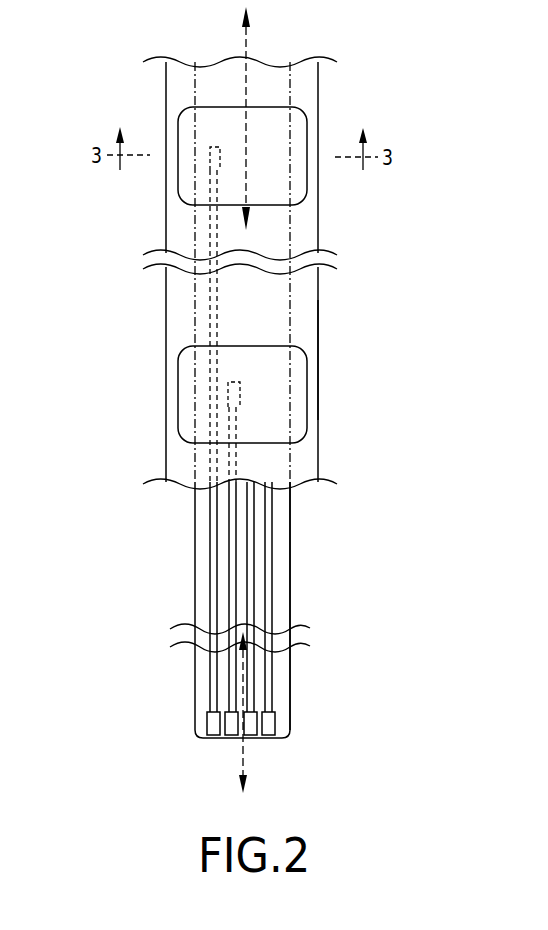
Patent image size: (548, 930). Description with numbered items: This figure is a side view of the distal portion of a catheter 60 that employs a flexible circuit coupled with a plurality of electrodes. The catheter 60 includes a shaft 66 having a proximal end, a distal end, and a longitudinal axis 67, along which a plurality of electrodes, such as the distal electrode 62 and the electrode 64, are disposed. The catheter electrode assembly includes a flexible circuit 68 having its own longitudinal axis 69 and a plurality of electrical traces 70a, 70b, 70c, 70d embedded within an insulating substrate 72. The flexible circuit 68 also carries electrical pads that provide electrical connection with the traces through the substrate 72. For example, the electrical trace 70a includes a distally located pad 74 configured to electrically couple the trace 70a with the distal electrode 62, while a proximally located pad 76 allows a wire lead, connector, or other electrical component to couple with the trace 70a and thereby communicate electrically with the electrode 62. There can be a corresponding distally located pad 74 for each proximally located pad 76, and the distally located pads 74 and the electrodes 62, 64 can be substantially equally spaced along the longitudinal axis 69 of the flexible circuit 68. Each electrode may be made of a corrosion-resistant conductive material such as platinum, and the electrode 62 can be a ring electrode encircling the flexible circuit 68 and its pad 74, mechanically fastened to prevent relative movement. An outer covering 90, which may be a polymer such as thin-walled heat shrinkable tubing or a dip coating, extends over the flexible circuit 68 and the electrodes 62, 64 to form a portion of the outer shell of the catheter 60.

The catheter 60 is at (130, 398).
The distal electrode 62 is at (303, 115).
The electrode 64 is at (300, 395).
The shaft 66 is at (348, 357).
The longitudinal axis of the shaft 67 is at (248, 38).
The flexible circuit 68 is at (150, 526).
The longitudinal axis of the flexible circuit 69 is at (244, 757).
The electrical trace 70a is at (212, 663).
The electrical trace 70b is at (227, 695).
The electrical trace 70c is at (255, 663).
The electrical trace 70d is at (272, 693).
The insulating substrate 72 is at (283, 548).
The distally located pad 74 is at (214, 148).
The proximally located pad 76 is at (213, 740).
The outer covering 90 is at (318, 435).